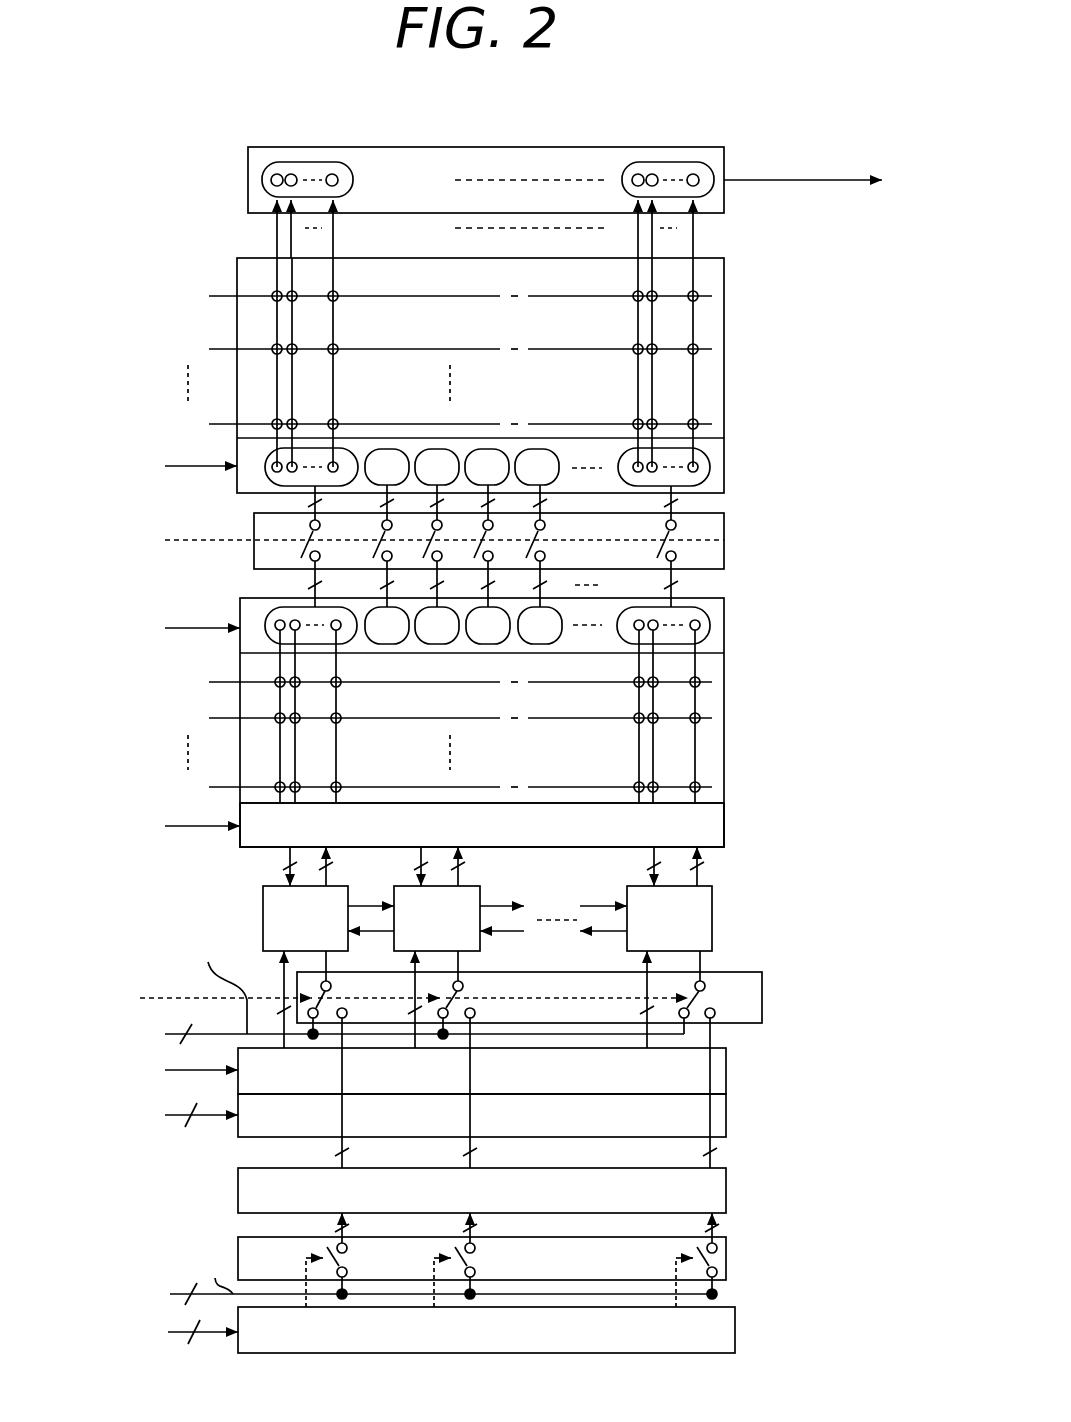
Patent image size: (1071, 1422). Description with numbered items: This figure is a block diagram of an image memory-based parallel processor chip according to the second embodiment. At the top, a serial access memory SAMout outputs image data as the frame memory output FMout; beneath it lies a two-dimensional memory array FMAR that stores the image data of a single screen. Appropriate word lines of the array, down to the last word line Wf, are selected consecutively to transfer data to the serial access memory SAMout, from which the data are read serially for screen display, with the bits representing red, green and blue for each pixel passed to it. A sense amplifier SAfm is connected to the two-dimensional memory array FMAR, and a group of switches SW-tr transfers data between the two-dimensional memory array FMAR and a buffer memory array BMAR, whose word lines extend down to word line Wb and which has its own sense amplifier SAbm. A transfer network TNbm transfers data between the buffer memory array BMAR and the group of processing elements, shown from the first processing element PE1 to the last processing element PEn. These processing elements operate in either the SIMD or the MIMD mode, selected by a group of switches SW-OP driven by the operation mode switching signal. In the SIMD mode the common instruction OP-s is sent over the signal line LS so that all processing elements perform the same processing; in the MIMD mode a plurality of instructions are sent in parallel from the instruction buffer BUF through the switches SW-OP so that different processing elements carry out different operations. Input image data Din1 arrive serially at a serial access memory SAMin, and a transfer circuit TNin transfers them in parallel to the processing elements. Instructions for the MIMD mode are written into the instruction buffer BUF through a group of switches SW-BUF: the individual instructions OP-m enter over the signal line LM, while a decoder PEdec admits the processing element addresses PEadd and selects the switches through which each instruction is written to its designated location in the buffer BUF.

The serial access memory for outputting image data SAMout is at (486, 156).
The frame memory output FMout is at (814, 162).
The two-dimensional memory array FMAR is at (486, 363).
The word line of two-dimensional memory array Wf is at (442, 425).
The word line of buffer memory array Wb is at (442, 788).
The sense amplifier SAfm is at (726, 463).
The group of switches SW-tr is at (726, 543).
The sense amplifier SAbm is at (726, 613).
The buffer memory array BMAR is at (493, 714).
The transfer network TNbm is at (726, 822).
The processing element PE1 is at (263, 908).
The processing element PEn is at (712, 904).
The signal line LS is at (218, 986).
The group of switches SW-OP is at (762, 1003).
The common instruction OP-s is at (395, 1033).
The transfer circuit TNin is at (727, 1074).
The serial image data input Din1 is at (175, 1116).
The serial access memory for storing serially input image data SAMin is at (727, 1121).
The instruction buffer BUF is at (727, 1193).
The signal line LM is at (215, 1272).
The group of switches SW-BUF is at (727, 1262).
The individual instruction OP-m is at (406, 1292).
The decoder PEdec is at (736, 1329).
The address of processing element PEadd is at (163, 1333).